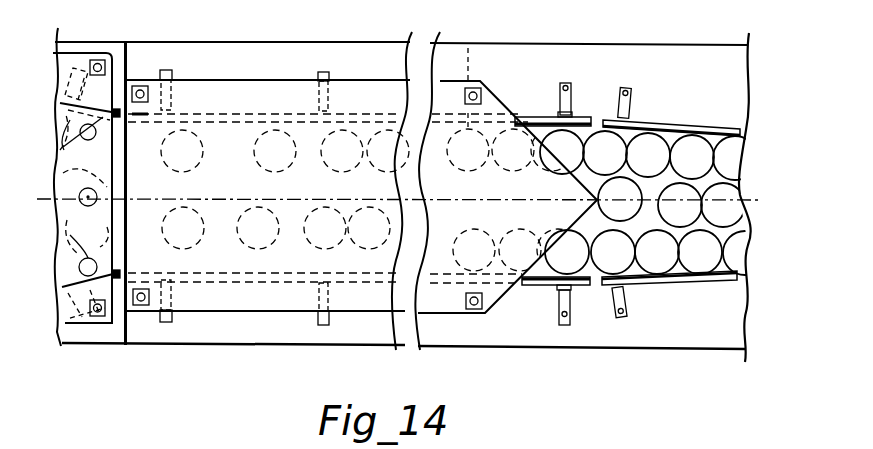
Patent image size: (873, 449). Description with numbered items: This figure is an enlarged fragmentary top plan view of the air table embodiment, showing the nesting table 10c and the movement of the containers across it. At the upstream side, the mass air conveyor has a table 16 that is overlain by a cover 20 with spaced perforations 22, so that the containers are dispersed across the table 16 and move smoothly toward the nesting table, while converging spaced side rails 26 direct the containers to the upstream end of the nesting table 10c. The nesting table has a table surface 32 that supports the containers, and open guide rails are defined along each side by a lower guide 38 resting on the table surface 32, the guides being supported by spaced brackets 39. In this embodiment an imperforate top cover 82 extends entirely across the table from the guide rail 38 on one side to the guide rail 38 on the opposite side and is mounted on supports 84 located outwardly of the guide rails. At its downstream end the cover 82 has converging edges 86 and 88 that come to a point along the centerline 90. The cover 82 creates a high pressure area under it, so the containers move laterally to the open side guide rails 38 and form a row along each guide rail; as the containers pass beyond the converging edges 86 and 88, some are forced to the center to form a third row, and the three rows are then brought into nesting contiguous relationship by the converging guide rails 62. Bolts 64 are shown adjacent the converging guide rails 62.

The nesting table 10c is at (323, 25).
The table 16 is at (82, 337).
The cover 20 is at (66, 32).
The spaced perforations 22 is at (92, 258).
The side rails 26 is at (122, 38).
The table surface 32 is at (322, 318).
The lower guide 38 is at (280, 76).
The brackets 39 is at (173, 70).
The converging guide rails 62 is at (702, 127).
The plate bolt 64 is at (645, 70).
The imperforate top cover 82 is at (512, 196).
The supports 84 is at (143, 72).
The converging edge 86 is at (488, 89).
The converging edge 88 is at (505, 307).
The centerline 90 is at (740, 205).